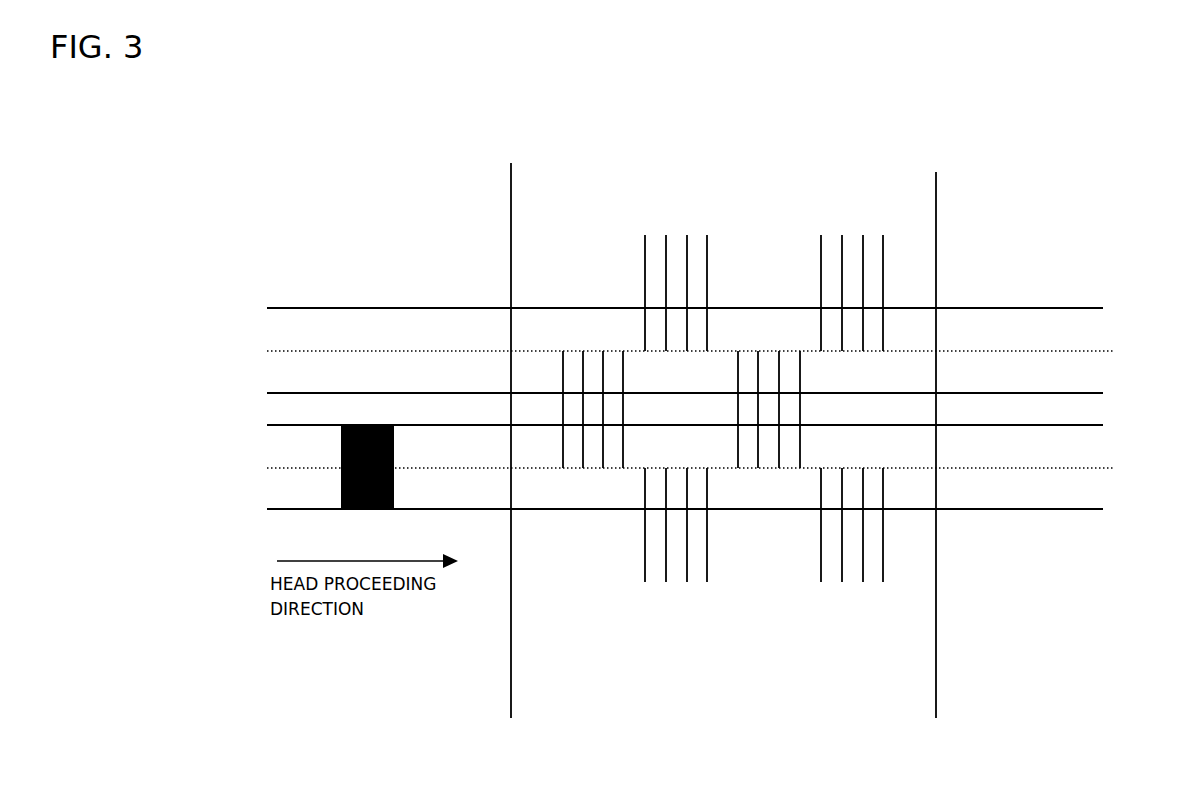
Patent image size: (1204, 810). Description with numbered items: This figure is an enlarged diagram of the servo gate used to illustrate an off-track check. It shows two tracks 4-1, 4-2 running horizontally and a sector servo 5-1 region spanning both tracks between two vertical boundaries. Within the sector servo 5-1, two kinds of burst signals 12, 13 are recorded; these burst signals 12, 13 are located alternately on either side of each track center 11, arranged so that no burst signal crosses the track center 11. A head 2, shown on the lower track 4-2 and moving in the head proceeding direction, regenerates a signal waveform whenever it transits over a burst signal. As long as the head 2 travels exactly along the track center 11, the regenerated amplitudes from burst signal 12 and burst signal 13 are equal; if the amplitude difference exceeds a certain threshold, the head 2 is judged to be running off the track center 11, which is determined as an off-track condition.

The head 2 is at (357, 509).
The track 4-1 is at (257, 305).
The track 4-2 is at (257, 421).
The sector servo 5-1 is at (936, 740).
The track center 11 is at (1077, 351).
The burst signal 12 is at (623, 348).
The burst signal 13 is at (707, 228).